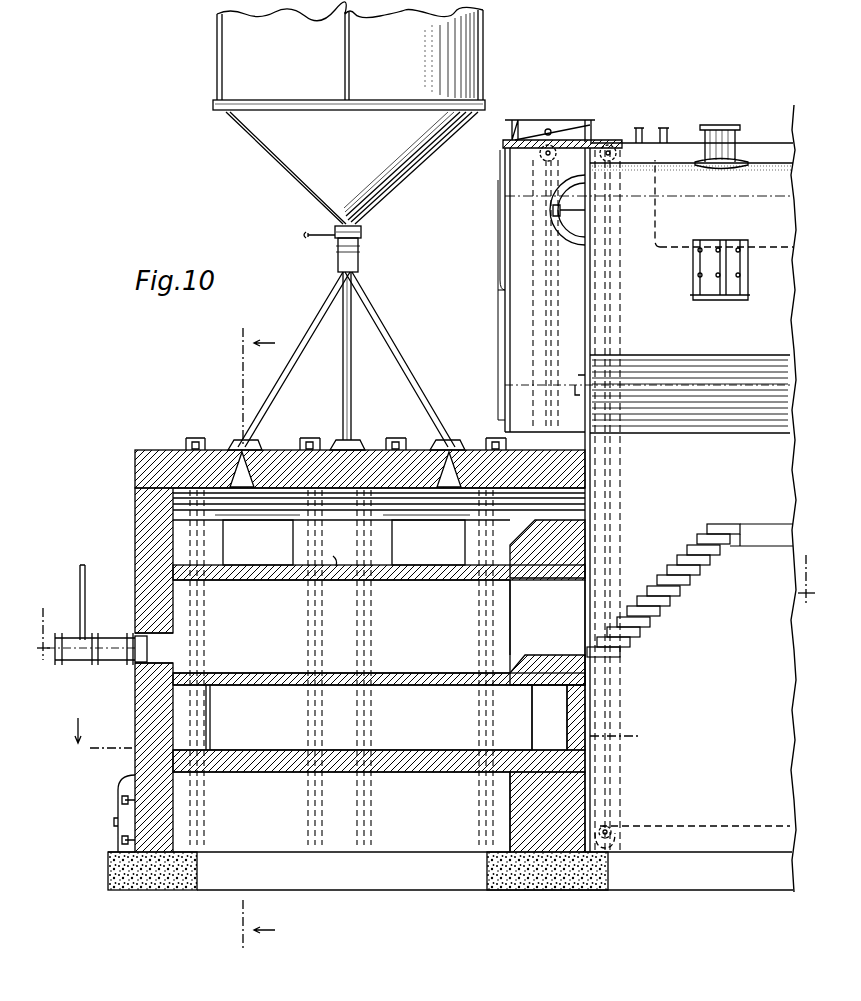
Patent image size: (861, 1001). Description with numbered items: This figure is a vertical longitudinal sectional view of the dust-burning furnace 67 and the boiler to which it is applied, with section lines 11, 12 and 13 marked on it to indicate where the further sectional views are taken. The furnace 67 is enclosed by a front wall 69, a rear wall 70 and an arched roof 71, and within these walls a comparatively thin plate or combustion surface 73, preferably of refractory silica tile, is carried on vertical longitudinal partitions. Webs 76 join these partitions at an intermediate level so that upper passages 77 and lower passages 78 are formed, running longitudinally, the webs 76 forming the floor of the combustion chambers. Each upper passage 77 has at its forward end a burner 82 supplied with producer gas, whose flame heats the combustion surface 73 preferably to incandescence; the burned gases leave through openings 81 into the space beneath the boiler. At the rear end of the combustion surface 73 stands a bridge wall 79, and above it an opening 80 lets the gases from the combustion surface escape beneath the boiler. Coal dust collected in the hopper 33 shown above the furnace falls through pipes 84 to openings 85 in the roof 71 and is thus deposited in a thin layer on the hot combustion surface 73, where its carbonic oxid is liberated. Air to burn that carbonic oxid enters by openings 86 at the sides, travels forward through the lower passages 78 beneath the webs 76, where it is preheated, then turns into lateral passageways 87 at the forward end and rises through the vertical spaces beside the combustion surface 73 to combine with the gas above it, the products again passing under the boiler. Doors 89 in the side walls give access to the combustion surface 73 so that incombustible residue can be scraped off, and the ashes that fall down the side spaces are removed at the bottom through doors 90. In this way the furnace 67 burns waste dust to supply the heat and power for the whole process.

The hopper 33 is at (230, 62).
The pipes 84 is at (272, 388).
The openings 85 is at (262, 448).
The arched roof 71 is at (137, 470).
The front wall 69 is at (137, 532).
The webs 76 is at (258, 582).
The upper passages 77 is at (341, 626).
The doors 89 is at (342, 540).
The combustion surface 73 is at (340, 549).
The bridge wall 79 is at (565, 545).
The openings 81 is at (547, 632).
The opening 80 is at (590, 500).
The lower passages 78 is at (379, 711).
The lateral passageways 87 is at (211, 714).
The openings 86 is at (550, 720).
The rear wall 70 is at (565, 797).
The doors 90 is at (116, 800).
The burner 82 is at (72, 666).
The furnace 67 is at (450, 613).
The section line 12 is at (253, 639).
The section line 11 is at (426, 598).
The section line 13 is at (359, 737).